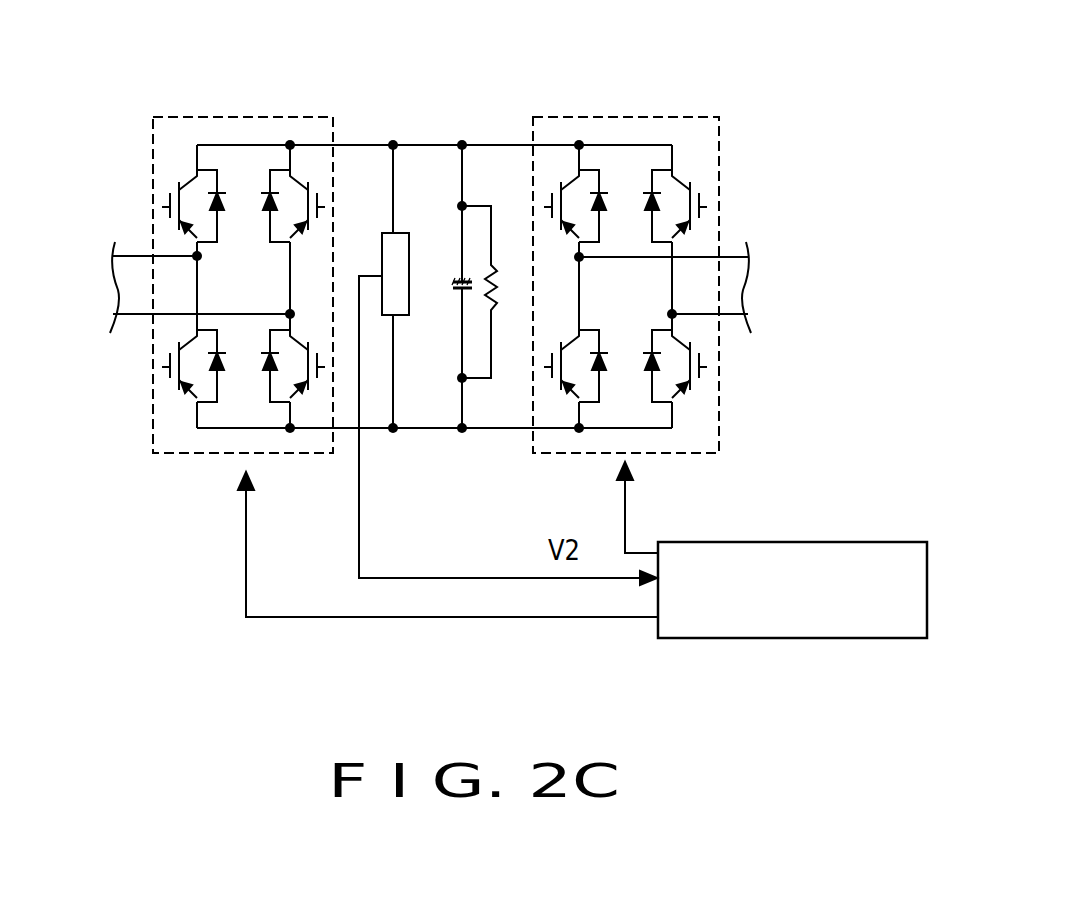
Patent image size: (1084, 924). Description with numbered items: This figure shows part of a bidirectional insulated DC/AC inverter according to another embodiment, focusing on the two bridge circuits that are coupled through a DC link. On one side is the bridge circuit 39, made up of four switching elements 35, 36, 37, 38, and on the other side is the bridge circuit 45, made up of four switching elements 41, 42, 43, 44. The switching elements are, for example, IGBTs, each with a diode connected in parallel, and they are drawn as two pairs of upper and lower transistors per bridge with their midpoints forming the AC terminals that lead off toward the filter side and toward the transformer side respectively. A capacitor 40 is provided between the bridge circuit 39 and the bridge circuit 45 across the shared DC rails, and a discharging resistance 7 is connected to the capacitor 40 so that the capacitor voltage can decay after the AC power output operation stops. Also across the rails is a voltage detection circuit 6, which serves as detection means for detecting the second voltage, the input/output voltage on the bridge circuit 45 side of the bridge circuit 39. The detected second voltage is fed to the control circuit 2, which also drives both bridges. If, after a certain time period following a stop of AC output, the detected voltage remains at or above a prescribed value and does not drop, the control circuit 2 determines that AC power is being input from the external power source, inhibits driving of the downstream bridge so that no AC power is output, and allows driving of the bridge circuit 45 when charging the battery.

The control circuit 2 is at (788, 638).
The voltage detection circuit 6 is at (387, 233).
The discharging resistance 7 is at (491, 267).
The switching element 35 is at (577, 184).
The switching element 36 is at (683, 186).
The switching element 37 is at (573, 392).
The switching element 38 is at (678, 390).
The bridge circuit 39 is at (635, 117).
The capacitor 40 is at (457, 290).
The switching element 41 is at (195, 182).
The switching element 42 is at (298, 184).
The switching element 43 is at (187, 393).
The switching element 44 is at (305, 390).
The bridge circuit 45 is at (245, 117).